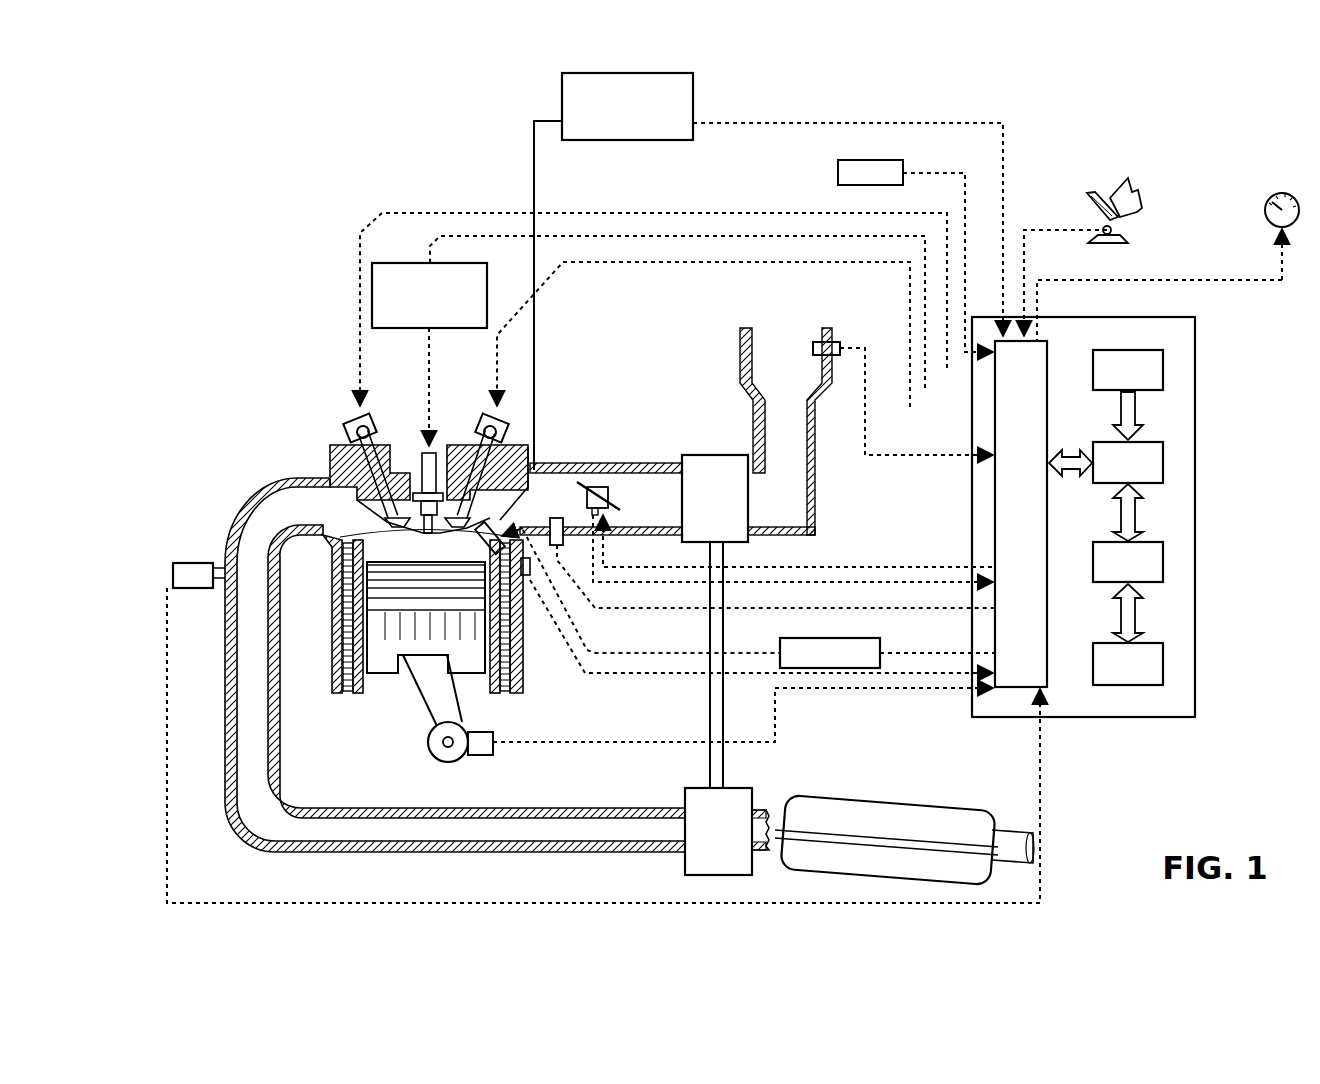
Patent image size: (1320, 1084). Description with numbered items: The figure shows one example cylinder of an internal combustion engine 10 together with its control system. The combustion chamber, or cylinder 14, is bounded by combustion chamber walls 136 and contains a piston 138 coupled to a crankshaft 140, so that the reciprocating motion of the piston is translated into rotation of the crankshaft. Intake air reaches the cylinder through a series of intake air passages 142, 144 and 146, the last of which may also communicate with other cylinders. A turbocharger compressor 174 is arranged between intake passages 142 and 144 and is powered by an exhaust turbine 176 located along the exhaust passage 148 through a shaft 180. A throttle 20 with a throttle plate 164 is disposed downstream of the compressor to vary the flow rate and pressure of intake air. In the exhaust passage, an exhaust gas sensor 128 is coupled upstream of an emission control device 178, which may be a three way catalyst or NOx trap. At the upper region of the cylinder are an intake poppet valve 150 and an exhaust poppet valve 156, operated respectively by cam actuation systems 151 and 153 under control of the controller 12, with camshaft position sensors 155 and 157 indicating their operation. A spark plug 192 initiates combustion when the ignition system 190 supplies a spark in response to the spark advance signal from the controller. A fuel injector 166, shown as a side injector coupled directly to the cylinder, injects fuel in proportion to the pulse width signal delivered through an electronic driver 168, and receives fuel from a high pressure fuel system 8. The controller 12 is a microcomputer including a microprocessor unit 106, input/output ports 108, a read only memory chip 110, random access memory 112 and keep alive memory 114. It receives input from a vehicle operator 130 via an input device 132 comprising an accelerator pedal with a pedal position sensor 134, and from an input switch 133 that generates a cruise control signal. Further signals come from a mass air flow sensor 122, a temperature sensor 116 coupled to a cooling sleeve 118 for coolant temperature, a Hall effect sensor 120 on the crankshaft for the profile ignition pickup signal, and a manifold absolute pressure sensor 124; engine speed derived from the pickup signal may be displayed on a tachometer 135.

The high pressure fuel system 8 is at (693, 82).
The internal combustion engine 10 is at (158, 152).
The controller 12 is at (1126, 503).
The cylinder 14 is at (332, 563).
The throttle 20 is at (599, 484).
The microprocessor unit 106 is at (1163, 458).
The input/output ports 108 is at (1048, 420).
The read only memory chip 110 is at (1163, 365).
The random access memory 112 is at (1163, 560).
The keep alive memory 114 is at (1163, 660).
The temperature sensor 116 is at (532, 580).
The cooling sleeve 118 is at (522, 688).
The Hall effect sensor 120 is at (490, 757).
The mass air flow sensor 122 is at (836, 342).
The manifold absolute pressure sensor 124 is at (580, 580).
The exhaust gas sensor 128 is at (173, 566).
The vehicle operator 130 is at (1142, 200).
The input device 132 is at (1090, 212).
The input switch 133 is at (838, 173).
The pedal position sensor 134 is at (1122, 231).
The tachometer 135 is at (1292, 197).
The combustion chamber walls 136 is at (366, 698).
The piston 138 is at (410, 660).
The crankshaft 140 is at (433, 756).
The intake air passage 142 is at (786, 431).
The intake air passage 144 is at (667, 499).
The intake air passage 146 is at (553, 497).
The exhaust passage 148 is at (455, 665).
The intake poppet valve 150 is at (466, 470).
The cam actuation system 151 is at (484, 416).
The cam actuation system 153 is at (366, 417).
The camshaft position sensor 155 is at (503, 432).
The exhaust poppet valve 156 is at (362, 502).
The camshaft position sensor 157 is at (350, 430).
The throttle plate 164 is at (578, 483).
The fuel injector 166 is at (627, 577).
The electronic driver 168 is at (781, 640).
The compressor 174 is at (701, 455).
The exhaust turbine 176 is at (685, 860).
The emission control device 178 is at (950, 806).
The shaft 180 is at (724, 760).
The ignition system 190 is at (385, 263).
The spark plug 192 is at (422, 462).